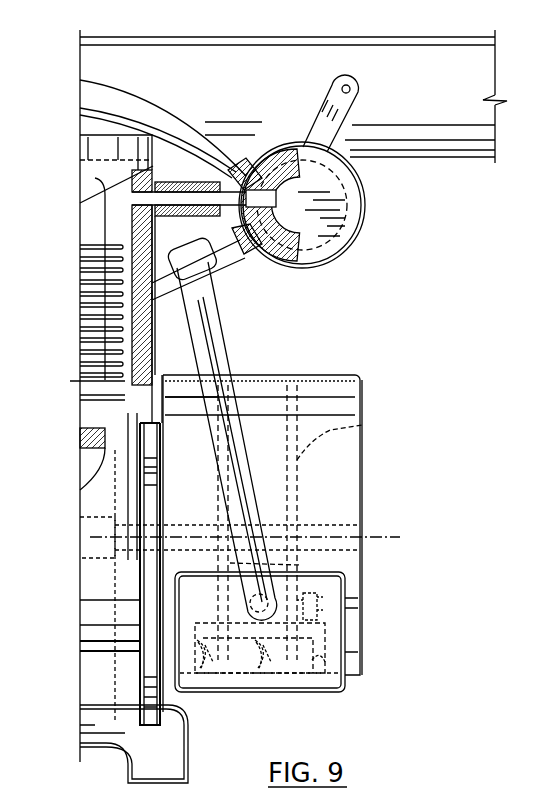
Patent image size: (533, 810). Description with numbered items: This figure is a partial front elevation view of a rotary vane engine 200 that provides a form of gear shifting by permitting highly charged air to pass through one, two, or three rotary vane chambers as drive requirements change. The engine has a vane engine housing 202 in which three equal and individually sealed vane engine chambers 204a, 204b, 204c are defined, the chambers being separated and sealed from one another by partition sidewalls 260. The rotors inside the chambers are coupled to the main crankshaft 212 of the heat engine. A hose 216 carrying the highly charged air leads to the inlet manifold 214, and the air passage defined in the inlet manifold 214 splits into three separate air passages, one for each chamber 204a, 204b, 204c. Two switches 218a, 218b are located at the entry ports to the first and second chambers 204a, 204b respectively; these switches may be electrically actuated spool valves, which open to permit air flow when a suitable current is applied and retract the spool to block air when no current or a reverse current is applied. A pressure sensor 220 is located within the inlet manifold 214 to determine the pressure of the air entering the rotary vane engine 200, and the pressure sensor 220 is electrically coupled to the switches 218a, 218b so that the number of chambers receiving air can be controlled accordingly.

The rotary vane engine 200 is at (289, 511).
The vane engine housing 202 is at (360, 388).
The vane engine chamber 204a is at (188, 362).
The vane engine chamber 204b is at (264, 365).
The vane engine chamber 204c is at (330, 364).
The main crankshaft 212 is at (333, 527).
The inlet manifold 214 is at (332, 616).
The hose 216 is at (210, 295).
The switch 218a is at (210, 650).
The switch 218b is at (267, 650).
The pressure sensor 220 is at (318, 606).
The partition sidewall 260 is at (362, 425).